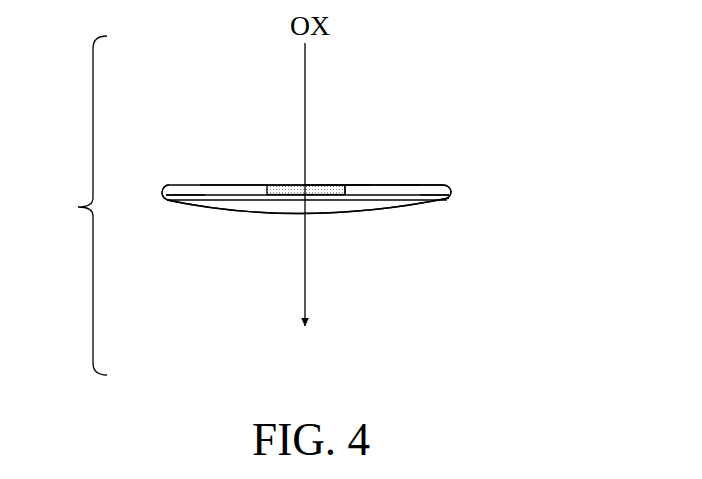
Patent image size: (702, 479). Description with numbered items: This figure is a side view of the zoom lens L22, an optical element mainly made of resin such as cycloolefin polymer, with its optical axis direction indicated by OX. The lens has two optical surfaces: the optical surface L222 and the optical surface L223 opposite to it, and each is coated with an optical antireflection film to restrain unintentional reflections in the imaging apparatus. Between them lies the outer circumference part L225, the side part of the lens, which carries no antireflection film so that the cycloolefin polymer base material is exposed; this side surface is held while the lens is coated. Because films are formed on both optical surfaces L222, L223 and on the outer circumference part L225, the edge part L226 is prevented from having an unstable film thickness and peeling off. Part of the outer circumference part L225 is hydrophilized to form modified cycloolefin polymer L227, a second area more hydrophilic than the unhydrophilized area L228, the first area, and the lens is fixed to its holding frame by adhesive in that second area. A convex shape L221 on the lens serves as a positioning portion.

The zoom lens L22 is at (235, 205).
The convex shape L221 is at (458, 196).
The optical surface L222 is at (248, 182).
The optical surface L223 is at (290, 220).
The outer circumference part L225 is at (196, 192).
The edge part L226 is at (421, 183).
The modified cycloolefin polymer L227 is at (339, 182).
The unhydrophilized area L228 is at (390, 189).